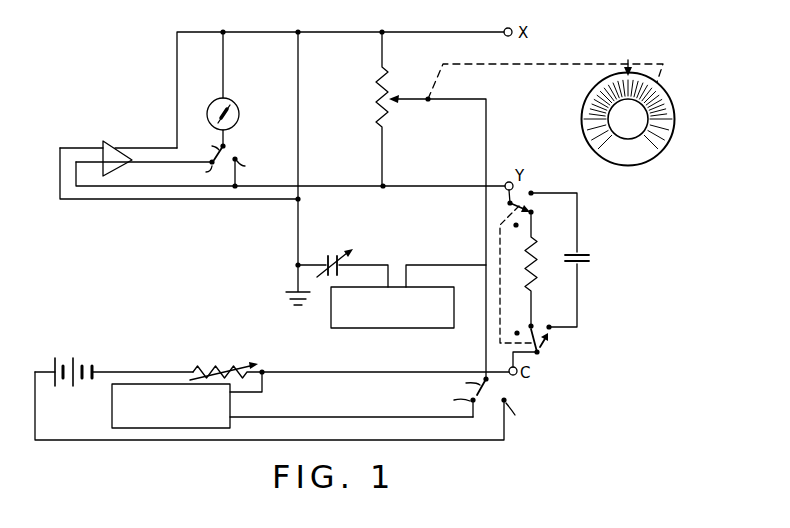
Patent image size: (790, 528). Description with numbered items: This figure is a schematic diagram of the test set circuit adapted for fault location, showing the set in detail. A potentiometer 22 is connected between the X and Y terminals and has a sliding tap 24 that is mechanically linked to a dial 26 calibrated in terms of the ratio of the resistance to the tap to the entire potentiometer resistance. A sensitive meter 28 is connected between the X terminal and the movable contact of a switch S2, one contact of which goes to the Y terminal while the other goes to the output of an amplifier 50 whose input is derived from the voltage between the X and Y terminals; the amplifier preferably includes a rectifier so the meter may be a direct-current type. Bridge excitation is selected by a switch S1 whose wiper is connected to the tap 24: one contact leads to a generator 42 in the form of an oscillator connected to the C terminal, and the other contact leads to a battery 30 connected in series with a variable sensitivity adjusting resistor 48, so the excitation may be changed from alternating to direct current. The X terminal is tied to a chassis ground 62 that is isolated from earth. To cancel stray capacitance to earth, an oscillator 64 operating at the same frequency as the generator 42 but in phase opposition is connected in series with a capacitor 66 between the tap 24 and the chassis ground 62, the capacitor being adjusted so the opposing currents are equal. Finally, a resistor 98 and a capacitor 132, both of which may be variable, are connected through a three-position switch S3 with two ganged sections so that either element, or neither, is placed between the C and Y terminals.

The potentiometer 22 is at (378, 108).
The tap 24 is at (389, 97).
The dial 26 is at (640, 160).
The meter 28 is at (237, 107).
The battery 30 is at (77, 357).
The generator 42 is at (112, 409).
The variable sensitivity adjusting resistor 48 is at (222, 364).
The amplifier 50 is at (115, 145).
The chassis ground 62 is at (298, 278).
The oscillator 64 is at (395, 329).
The capacitor 66 is at (330, 257).
The resistor 98 is at (535, 280).
The capacitor 132 is at (585, 254).
The switch S1 is at (496, 388).
The switch S2 is at (232, 155).
The three-position switch S3 is at (537, 277).